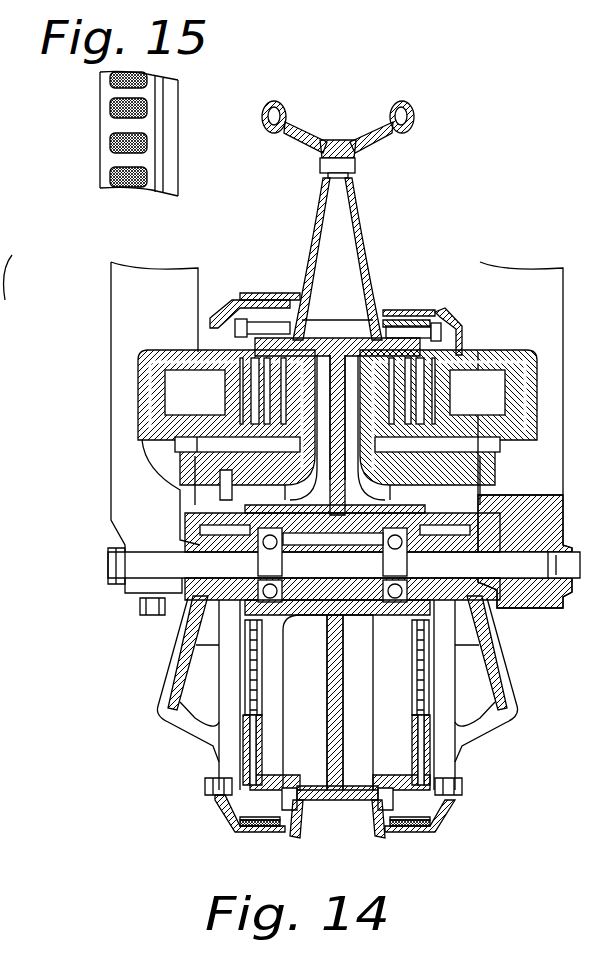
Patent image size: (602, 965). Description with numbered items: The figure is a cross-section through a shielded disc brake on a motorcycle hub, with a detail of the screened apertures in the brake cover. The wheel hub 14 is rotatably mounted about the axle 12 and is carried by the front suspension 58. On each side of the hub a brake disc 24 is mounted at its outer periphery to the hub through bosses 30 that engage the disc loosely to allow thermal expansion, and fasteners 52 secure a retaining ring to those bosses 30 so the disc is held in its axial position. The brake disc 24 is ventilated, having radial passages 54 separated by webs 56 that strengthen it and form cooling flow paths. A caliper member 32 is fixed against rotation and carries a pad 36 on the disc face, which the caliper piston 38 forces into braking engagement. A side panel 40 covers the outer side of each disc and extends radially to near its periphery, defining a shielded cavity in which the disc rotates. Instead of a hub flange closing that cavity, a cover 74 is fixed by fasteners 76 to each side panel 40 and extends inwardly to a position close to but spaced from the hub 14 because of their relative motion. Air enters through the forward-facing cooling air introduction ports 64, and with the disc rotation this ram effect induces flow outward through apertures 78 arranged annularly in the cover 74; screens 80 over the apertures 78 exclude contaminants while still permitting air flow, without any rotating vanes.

In FIG. 14, the rear wheel axle 12 is at (562, 568).
In FIG. 14, the wheel hub 14 is at (384, 138).
In FIG. 14, the brake disc 24 is at (408, 728).
In FIG. 14, the bosses 30 is at (393, 317).
In FIG. 14, the caliper member 32 is at (515, 443).
In FIG. 14, the pad 36 is at (461, 342).
In FIG. 14, the caliper piston 38 is at (488, 393).
In FIG. 14, the side panel 40 is at (480, 640).
In FIG. 14, the fasteners 52 is at (413, 327).
In FIG. 14, the radial passages 54 is at (417, 652).
In FIG. 14, the webs 56 is at (413, 678).
In FIG. 14, the front suspension 58 is at (552, 296).
In FIG. 14, the cooling air introduction ports 64 is at (480, 700).
In FIG. 15, the cover 74 is at (170, 146).
In FIG. 14, the cover 74 is at (450, 821).
In FIG. 14, the fasteners 76 is at (464, 790).
In FIG. 15, the apertures 78 is at (108, 143).
In FIG. 14, the apertures 78 is at (405, 828).
In FIG. 15, the screens 80 is at (108, 107).
In FIG. 14, the screens 80 is at (394, 828).